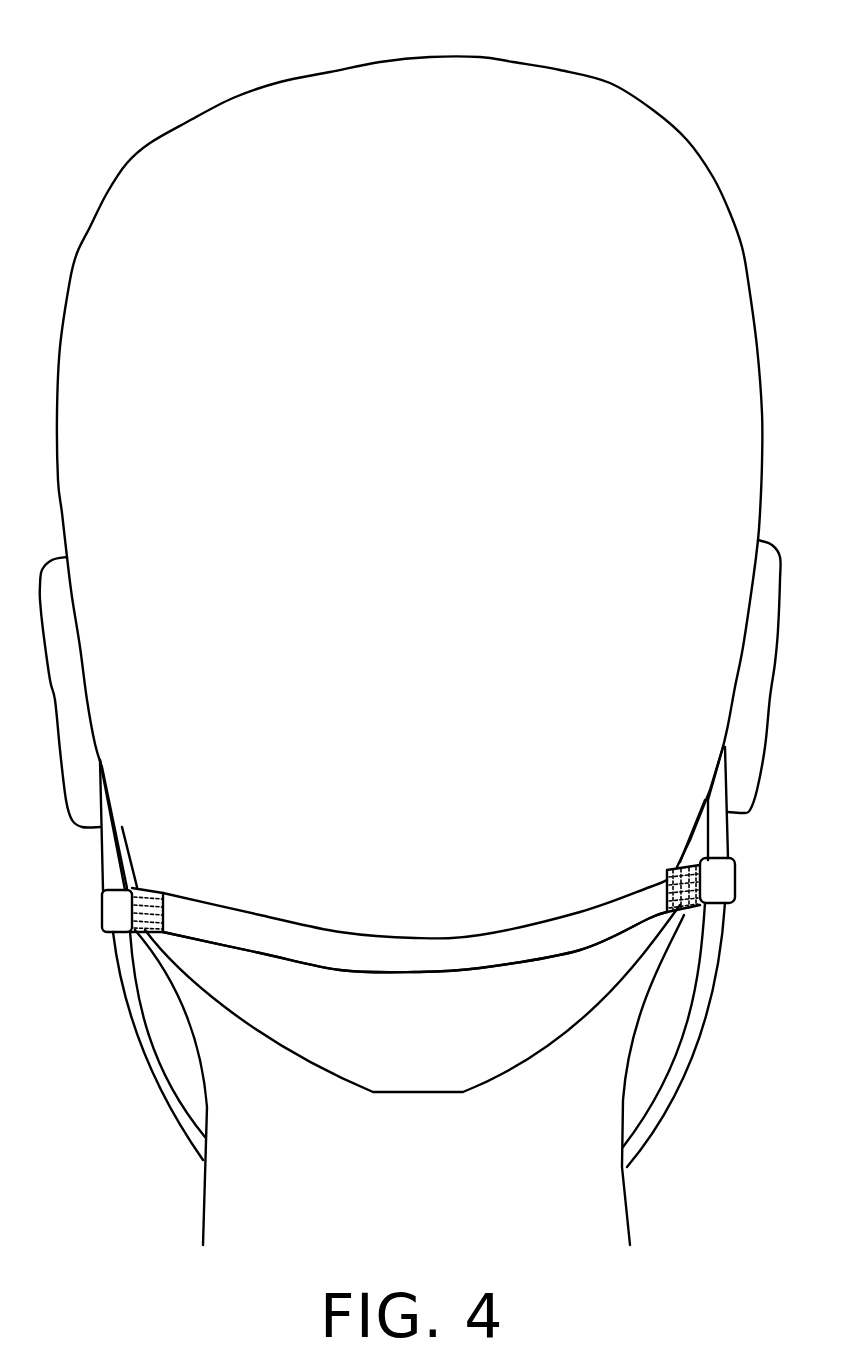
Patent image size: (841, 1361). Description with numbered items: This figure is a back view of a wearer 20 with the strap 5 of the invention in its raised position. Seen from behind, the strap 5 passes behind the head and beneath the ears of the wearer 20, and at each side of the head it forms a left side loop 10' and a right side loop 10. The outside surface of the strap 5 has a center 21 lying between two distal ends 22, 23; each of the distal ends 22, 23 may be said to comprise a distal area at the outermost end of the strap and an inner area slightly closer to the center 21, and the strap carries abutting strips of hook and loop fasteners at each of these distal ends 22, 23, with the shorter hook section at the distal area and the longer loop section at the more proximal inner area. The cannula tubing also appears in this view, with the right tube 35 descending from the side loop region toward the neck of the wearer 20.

The strap 5 is at (401, 996).
The right side loop 10 is at (766, 880).
The left side loop 10' is at (73, 905).
The wearer 20 is at (685, 88).
The center 21 is at (438, 957).
The distal end 22 is at (678, 868).
The distal end 23 is at (133, 889).
The right tube 35 is at (150, 1092).